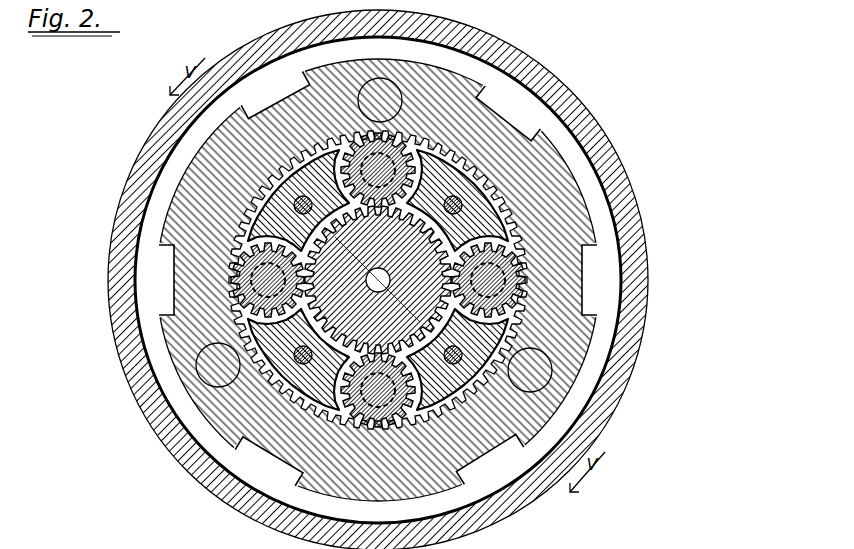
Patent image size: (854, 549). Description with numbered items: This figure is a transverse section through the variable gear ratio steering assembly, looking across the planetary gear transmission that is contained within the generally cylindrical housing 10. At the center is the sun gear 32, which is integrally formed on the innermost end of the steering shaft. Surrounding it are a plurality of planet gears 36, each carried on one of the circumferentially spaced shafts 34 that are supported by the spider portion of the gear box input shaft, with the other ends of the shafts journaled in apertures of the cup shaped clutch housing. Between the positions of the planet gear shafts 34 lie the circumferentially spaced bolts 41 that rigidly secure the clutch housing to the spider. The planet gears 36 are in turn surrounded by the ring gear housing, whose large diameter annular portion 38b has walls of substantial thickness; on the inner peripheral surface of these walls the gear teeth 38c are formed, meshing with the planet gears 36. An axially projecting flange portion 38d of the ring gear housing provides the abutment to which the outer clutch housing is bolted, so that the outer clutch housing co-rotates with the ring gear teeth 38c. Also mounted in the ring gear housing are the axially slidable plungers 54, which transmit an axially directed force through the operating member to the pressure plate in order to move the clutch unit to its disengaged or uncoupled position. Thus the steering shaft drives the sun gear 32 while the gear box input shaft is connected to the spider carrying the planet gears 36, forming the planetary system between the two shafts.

The housing 10 is at (646, 258).
The sun gear 32 is at (437, 235).
The planet gear shaft 34 is at (392, 150).
The planet gear 36 is at (480, 84).
The large diameter annular portion 38b is at (533, 127).
The gear teeth 38c is at (592, 223).
The axially projecting flange portion 38d is at (273, 84).
The bolt 41 is at (458, 206).
The plunger 54 is at (388, 92).